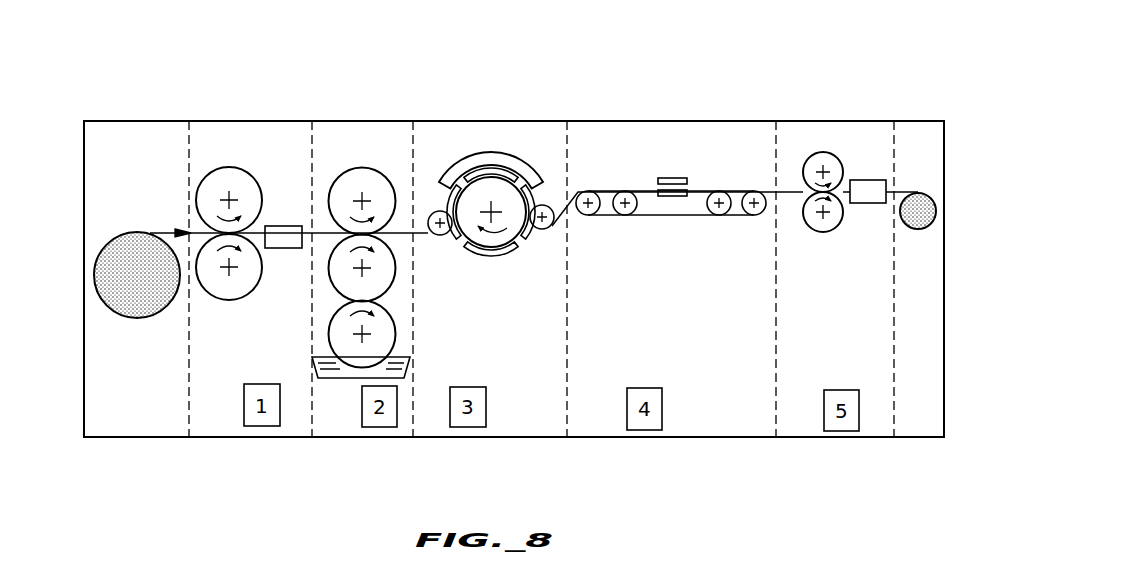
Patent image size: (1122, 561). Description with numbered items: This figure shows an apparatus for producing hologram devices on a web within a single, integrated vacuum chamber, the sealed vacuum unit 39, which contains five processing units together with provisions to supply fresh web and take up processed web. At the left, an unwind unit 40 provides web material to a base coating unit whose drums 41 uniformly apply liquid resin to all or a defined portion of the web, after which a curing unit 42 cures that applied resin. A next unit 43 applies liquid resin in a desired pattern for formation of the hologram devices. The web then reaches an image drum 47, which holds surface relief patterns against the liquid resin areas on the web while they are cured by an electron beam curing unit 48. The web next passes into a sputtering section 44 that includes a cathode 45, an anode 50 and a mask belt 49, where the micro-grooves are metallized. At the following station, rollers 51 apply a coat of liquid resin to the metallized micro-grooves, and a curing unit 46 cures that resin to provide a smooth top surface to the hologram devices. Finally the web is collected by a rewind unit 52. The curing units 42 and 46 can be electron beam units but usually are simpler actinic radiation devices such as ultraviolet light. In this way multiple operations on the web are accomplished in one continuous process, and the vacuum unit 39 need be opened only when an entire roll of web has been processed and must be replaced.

The sealed vacuum unit 39 is at (657, 121).
The unwind unit 40 is at (122, 318).
The drums 41 is at (217, 300).
The curing unit 42 is at (290, 226).
The image coating unit 43 is at (340, 368).
The sputtering section 44 is at (608, 418).
The cathode 45 is at (672, 196).
The curing unit 46 is at (868, 203).
The image drum 47 is at (470, 208).
The electron beam curing unit 48 is at (523, 169).
The mask belt 49 is at (652, 213).
The anode 50 is at (675, 178).
The rollers 51 is at (825, 152).
The rewind unit 52 is at (923, 193).